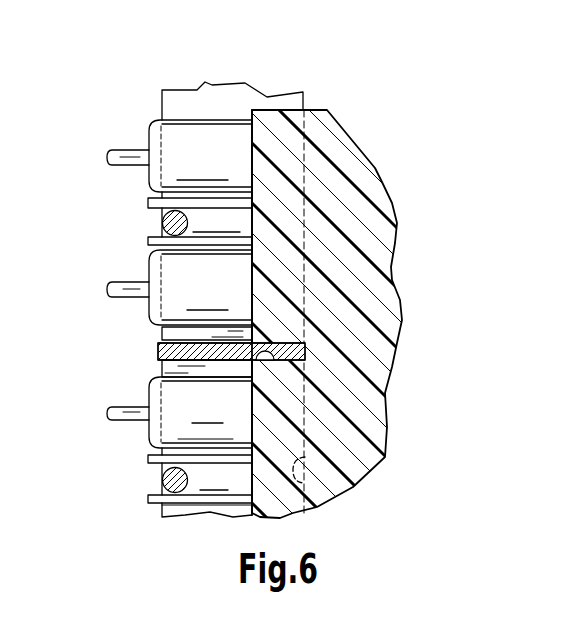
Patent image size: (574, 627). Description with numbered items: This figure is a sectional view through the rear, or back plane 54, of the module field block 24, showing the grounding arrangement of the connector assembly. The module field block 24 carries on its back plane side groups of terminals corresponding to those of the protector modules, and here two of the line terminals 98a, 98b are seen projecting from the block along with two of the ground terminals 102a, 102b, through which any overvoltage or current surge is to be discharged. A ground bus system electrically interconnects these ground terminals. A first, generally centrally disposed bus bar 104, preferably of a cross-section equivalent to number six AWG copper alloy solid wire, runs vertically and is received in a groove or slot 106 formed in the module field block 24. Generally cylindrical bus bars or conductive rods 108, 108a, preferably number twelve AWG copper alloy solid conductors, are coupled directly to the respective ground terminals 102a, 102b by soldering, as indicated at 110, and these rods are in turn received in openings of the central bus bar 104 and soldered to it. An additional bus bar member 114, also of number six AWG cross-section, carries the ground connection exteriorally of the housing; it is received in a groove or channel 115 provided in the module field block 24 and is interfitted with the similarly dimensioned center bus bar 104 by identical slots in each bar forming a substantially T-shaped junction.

The module field block 24 is at (352, 265).
The back plane 54 is at (104, 359).
The line terminal 98a is at (116, 148).
The line terminal 98b is at (123, 422).
The ground terminal 102a is at (149, 214).
The ground terminal 102b is at (157, 499).
The first bus bar 104 is at (207, 100).
The groove 106 is at (305, 483).
The conductive rod 108 is at (163, 222).
The conductive rod 108a is at (163, 480).
The solder joint 110 is at (148, 203).
The additional bus bar member 114 is at (308, 374).
The channel 115 is at (257, 358).